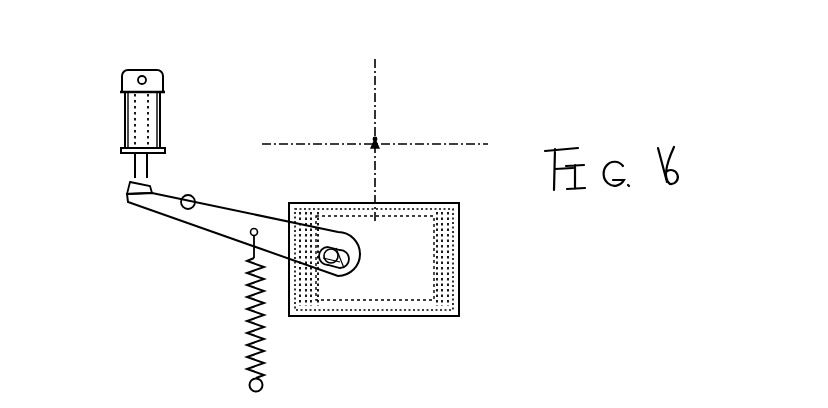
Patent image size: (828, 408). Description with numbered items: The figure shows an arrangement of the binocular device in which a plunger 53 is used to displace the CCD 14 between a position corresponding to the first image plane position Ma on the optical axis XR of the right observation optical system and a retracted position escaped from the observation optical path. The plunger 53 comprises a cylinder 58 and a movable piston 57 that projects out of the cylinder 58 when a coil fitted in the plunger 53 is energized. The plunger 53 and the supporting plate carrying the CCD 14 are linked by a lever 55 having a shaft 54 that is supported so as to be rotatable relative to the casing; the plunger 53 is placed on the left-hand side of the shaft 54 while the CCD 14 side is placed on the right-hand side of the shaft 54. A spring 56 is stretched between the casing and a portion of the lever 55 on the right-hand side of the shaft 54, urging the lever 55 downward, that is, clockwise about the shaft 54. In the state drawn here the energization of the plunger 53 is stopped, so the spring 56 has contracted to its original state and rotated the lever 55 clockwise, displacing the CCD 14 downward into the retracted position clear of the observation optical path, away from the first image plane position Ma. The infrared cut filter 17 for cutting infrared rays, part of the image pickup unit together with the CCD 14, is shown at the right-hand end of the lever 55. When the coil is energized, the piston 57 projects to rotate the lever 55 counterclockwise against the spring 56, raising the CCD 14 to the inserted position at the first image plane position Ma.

The plunger 53 is at (128, 78).
The movable piston 57 is at (137, 122).
The cylinder 58 is at (158, 112).
The shaft 54 is at (190, 196).
The lever 55 is at (210, 213).
The spring 56 is at (252, 335).
The charge-coupled device (CCD) 14 is at (428, 233).
The infrared cut filter 17 is at (459, 272).
The optical axis XR is at (377, 82).
The first image plane position Ma is at (378, 142).